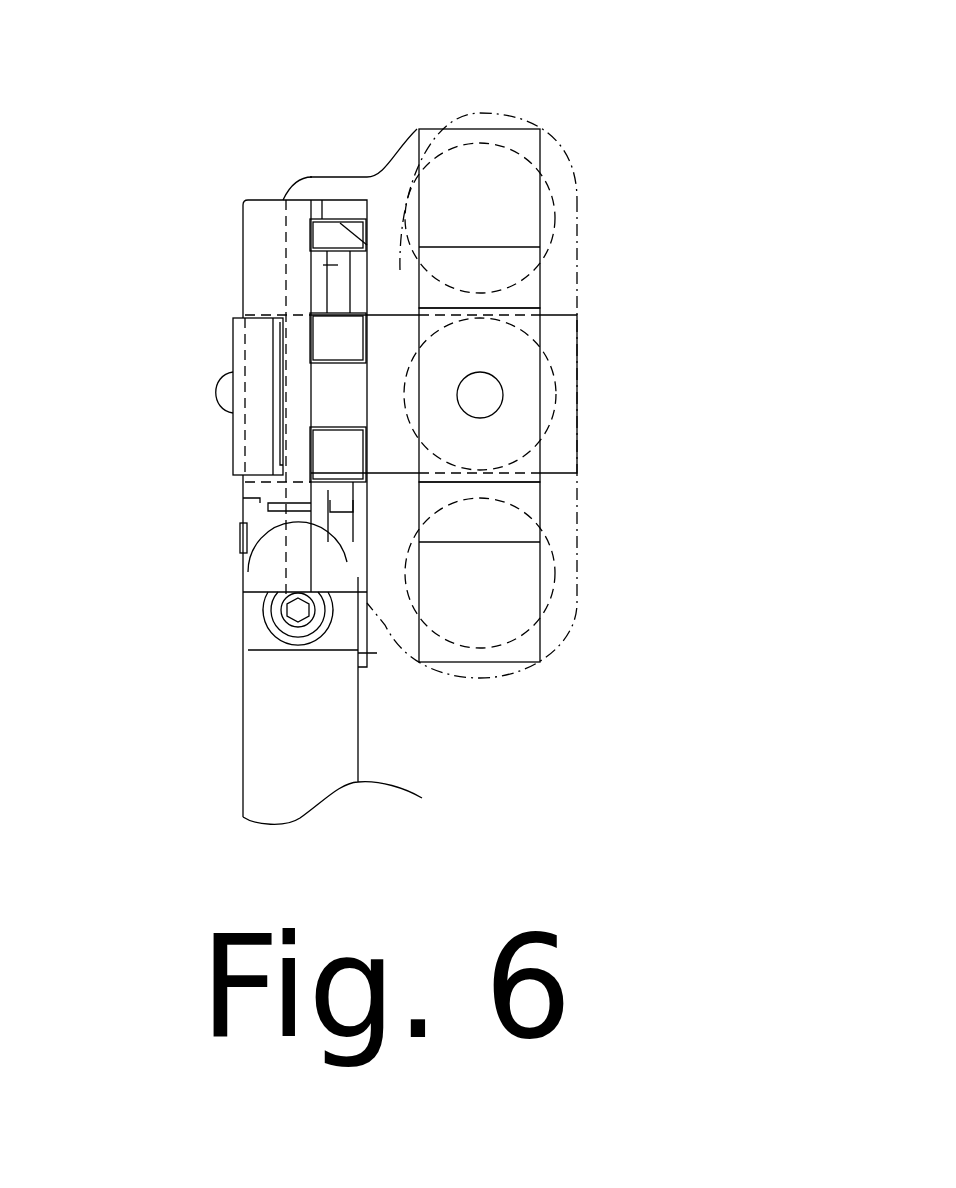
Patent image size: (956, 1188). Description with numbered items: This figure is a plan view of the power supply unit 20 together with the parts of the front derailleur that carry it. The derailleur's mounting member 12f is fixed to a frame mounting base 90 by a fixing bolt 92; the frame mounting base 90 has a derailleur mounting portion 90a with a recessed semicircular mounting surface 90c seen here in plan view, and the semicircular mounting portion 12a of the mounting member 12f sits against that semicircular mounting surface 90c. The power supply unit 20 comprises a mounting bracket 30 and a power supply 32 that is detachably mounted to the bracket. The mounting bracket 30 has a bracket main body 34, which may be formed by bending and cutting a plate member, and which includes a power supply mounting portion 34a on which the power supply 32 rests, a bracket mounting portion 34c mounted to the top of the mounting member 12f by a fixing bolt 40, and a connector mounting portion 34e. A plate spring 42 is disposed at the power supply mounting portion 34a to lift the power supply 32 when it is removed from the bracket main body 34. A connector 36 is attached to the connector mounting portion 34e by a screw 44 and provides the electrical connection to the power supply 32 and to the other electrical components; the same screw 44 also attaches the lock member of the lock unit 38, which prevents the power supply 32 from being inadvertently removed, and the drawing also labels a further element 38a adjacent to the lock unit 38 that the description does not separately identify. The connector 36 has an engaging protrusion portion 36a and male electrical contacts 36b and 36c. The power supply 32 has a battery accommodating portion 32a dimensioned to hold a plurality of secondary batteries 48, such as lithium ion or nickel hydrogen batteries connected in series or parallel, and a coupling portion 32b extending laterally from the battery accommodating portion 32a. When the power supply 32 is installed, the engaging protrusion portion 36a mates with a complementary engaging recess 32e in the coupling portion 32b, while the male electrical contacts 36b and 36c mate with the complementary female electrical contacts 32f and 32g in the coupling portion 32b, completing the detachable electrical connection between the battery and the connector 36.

The semicircular mounting portion 12a is at (337, 718).
The mounting member 12f is at (240, 793).
The power supply unit 20 is at (672, 351).
The mounting bracket 30 is at (652, 453).
The power supply 32 is at (585, 237).
The battery accommodating portion 32a is at (505, 112).
The coupling portion 32b is at (345, 177).
The engaging recess 32e is at (367, 245).
The female electrical contact 32f is at (317, 282).
The female electrical contact 32g is at (335, 500).
The bracket main body 34 is at (586, 470).
The power supply mounting portion 34a is at (575, 432).
The bracket mounting portion 34c is at (258, 642).
The connector mounting portion 34e is at (233, 338).
The connector 36 is at (240, 262).
The engaging protrusion portion 36a is at (320, 198).
The male electrical contact 36b is at (253, 548).
The male electrical contact 36c is at (312, 267).
The lock unit 38 is at (268, 380).
The cover plate edge 38a is at (233, 322).
The fixing bolt 40 is at (272, 612).
The plate spring 42 is at (520, 187).
The screw 44 is at (215, 395).
The secondary battery 48 is at (578, 358).
The frame mounting base 90 is at (230, 535).
The derailleur mounting portion 90a is at (240, 503).
The semicircular mounting surface 90c is at (252, 550).
The fixing bolt 92 is at (240, 480).